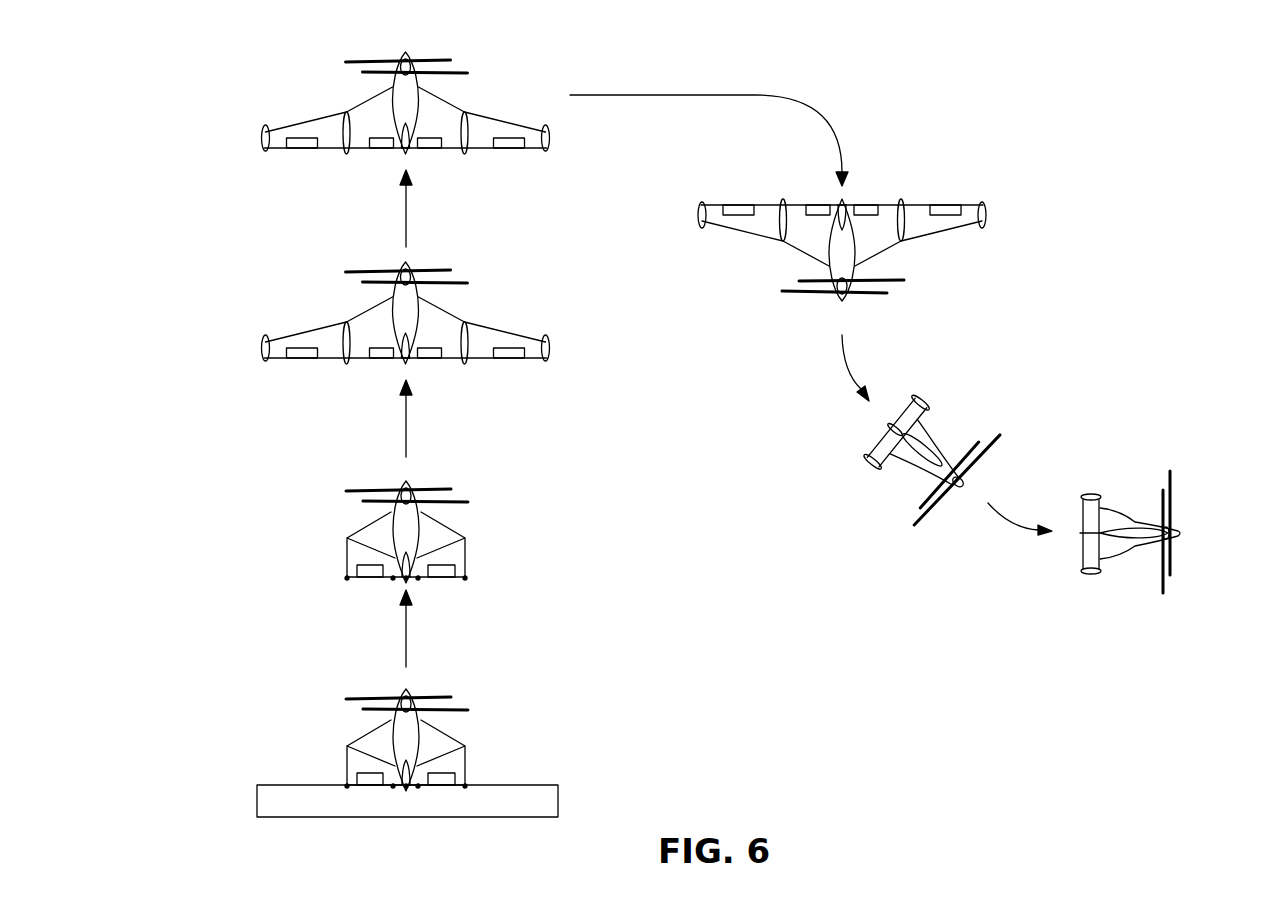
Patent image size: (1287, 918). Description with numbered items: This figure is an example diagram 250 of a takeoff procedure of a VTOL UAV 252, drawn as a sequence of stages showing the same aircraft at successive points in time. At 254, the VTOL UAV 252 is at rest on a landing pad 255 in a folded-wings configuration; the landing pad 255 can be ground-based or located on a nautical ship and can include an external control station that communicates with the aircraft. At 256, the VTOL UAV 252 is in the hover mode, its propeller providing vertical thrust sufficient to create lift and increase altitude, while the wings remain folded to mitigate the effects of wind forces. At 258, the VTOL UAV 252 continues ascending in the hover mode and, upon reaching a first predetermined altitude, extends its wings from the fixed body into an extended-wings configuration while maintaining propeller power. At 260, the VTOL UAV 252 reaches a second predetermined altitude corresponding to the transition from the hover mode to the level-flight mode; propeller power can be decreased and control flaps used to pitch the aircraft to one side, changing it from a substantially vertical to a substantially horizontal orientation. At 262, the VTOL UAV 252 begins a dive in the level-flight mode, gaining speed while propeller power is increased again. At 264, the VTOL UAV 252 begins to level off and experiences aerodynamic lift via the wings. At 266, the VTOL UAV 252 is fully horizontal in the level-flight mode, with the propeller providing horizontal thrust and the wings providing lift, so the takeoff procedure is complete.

The diagram of a takeoff procedure 250 is at (195, 56).
The VTOL UAV 252 is at (405, 698).
The at-rest stage 254 is at (475, 672).
The landing pad 255 is at (288, 785).
The initial hover stage 256 is at (476, 462).
The wing-extension hover stage 258 is at (504, 279).
The transition stage 260 is at (504, 69).
The dive stage 262 is at (896, 175).
The level-off stage 264 is at (878, 511).
The level-flight stage 266 is at (1074, 603).